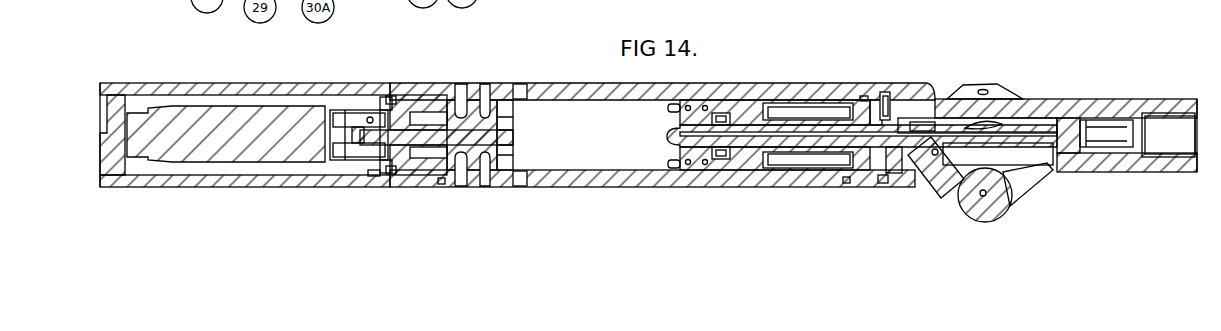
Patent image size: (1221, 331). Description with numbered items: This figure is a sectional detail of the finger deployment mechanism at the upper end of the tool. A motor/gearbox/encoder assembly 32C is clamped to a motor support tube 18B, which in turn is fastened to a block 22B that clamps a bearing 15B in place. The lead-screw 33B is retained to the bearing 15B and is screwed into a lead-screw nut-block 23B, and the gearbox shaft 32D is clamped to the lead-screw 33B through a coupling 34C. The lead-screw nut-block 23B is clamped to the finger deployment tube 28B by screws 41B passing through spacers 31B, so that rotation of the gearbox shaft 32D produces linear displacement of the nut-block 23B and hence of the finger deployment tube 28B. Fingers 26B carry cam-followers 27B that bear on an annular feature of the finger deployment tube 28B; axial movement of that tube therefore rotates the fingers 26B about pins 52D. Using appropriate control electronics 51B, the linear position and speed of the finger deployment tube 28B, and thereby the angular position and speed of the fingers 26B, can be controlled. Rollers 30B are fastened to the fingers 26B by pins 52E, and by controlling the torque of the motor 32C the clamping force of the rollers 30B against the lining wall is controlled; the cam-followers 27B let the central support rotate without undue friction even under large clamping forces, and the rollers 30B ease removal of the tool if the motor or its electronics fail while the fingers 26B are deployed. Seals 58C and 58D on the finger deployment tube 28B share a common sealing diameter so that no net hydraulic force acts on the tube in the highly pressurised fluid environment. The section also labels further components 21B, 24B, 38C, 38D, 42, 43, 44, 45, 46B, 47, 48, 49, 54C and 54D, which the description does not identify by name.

The bearing 15B is at (390, 97).
The motor support tube 18B is at (378, 108).
The outer housing 21B is at (268, 84).
The block 22B is at (418, 158).
The lead-screw nut-block 23B is at (508, 99).
The inner body 24B is at (752, 95).
The fingers 26B is at (1027, 202).
The cam-followers 27B is at (923, 188).
The finger deployment tube 28B is at (548, 188).
The rollers 30B is at (982, 223).
The spacers 31B is at (498, 85).
The motor/gearbox/encoder assembly 32C is at (190, 106).
The gearbox shaft 32D is at (353, 122).
The lead-screw 33B is at (428, 118).
The coupling 34C is at (355, 157).
The lower clip 38C is at (878, 187).
The stop member 38D is at (892, 165).
The screws 41B is at (458, 84).
The seal 42 is at (850, 98).
The end housing 43 is at (1153, 175).
The plug 44 is at (1078, 163).
The spring 45 is at (1020, 120).
The guide pin 46B is at (722, 112).
The drive rod 47 is at (1093, 130).
The end block 48 is at (1120, 117).
The central rod 49 is at (674, 164).
The control electronics 51B is at (112, 95).
The pins 52D is at (940, 140).
The pins 52E is at (988, 198).
The fastener 54C is at (373, 183).
The retaining clip 54D is at (893, 92).
The seal 58C is at (445, 183).
The seal 58D is at (847, 183).